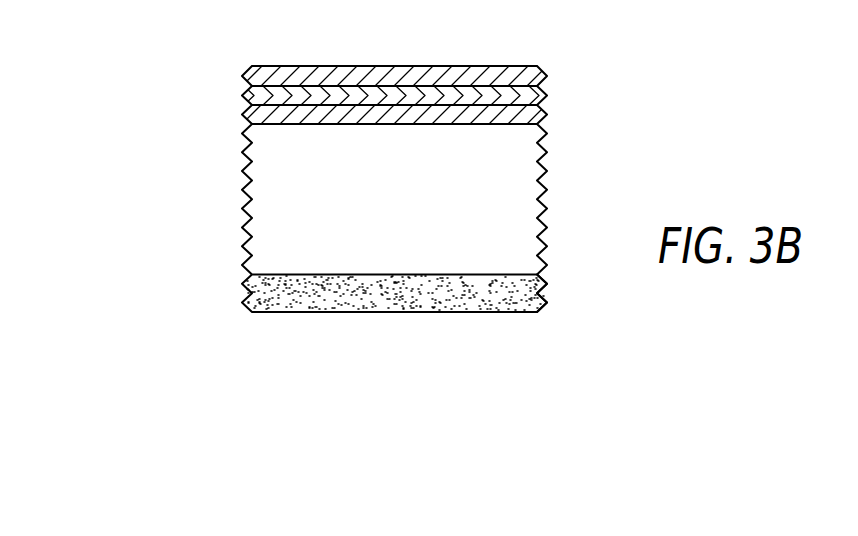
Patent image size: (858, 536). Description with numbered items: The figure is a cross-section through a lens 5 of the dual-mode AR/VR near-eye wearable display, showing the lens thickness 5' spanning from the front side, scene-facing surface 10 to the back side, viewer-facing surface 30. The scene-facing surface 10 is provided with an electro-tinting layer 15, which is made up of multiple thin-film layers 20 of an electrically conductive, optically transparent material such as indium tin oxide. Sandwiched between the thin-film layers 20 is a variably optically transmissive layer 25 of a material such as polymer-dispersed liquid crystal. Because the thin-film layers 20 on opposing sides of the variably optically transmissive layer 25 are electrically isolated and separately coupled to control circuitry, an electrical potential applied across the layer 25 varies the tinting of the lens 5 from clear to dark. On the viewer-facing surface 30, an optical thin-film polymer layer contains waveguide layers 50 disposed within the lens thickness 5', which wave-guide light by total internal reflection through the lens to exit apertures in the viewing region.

The front side, scene-facing surface 10 is at (375, 48).
The thin-film layer 20 is at (547, 77).
The variably optically transmissive layer 25 is at (547, 93).
The electro-tinting layer 15 is at (237, 68).
The lens 5 is at (439, 189).
The lens thickness 5' is at (143, 190).
The back side, viewer-facing surface 30 is at (394, 313).
The waveguide layer 50 is at (537, 292).